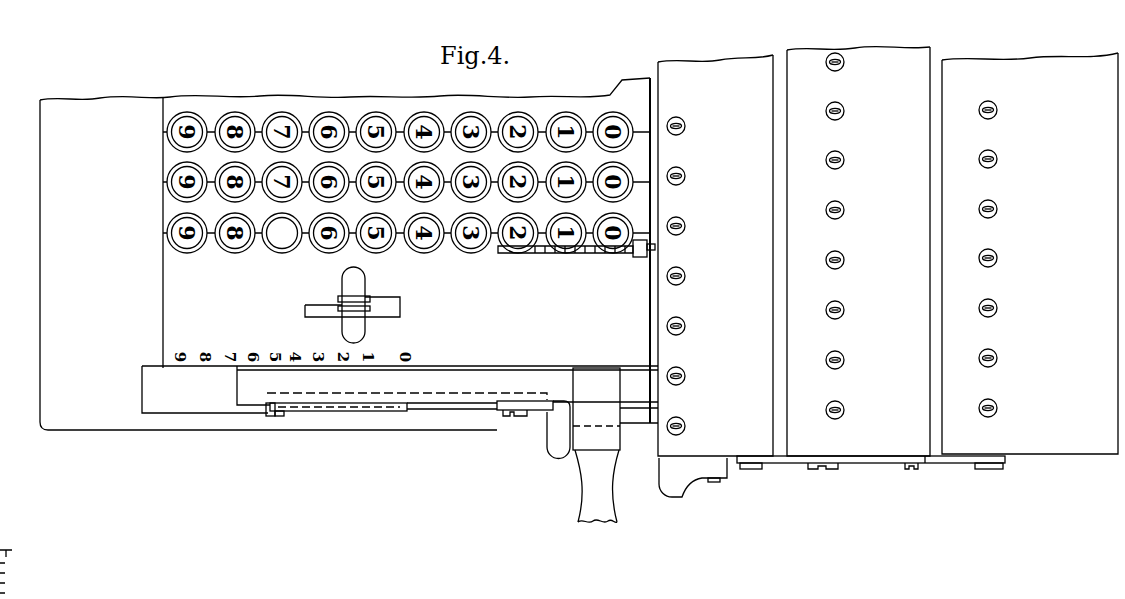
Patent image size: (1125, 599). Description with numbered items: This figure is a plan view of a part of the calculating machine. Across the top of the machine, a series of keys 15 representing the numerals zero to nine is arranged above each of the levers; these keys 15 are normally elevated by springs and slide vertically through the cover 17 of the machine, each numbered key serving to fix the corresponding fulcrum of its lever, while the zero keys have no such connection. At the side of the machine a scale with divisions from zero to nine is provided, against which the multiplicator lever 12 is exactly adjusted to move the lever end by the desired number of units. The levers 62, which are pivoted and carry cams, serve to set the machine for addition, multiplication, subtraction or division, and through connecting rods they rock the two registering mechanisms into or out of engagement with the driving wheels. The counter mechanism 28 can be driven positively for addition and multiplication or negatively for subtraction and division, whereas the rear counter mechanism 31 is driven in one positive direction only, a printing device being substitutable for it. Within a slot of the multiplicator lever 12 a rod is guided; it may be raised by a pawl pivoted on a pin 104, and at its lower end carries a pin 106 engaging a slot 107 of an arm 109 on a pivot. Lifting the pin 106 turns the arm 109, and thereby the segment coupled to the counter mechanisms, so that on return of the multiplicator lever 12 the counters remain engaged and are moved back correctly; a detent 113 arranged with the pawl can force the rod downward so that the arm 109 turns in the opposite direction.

The multiplicator lever 12 is at (451, 378).
The key 15 is at (268, 253).
The cover 17 is at (177, 284).
The counter mechanism 28 is at (858, 251).
The rear counter mechanism 31 is at (1030, 253).
The lever 62 is at (363, 308).
The pin 104 is at (509, 417).
The pin 106 is at (283, 417).
The slot 107 is at (270, 417).
The arm 109 is at (340, 413).
The detent 113 is at (556, 446).